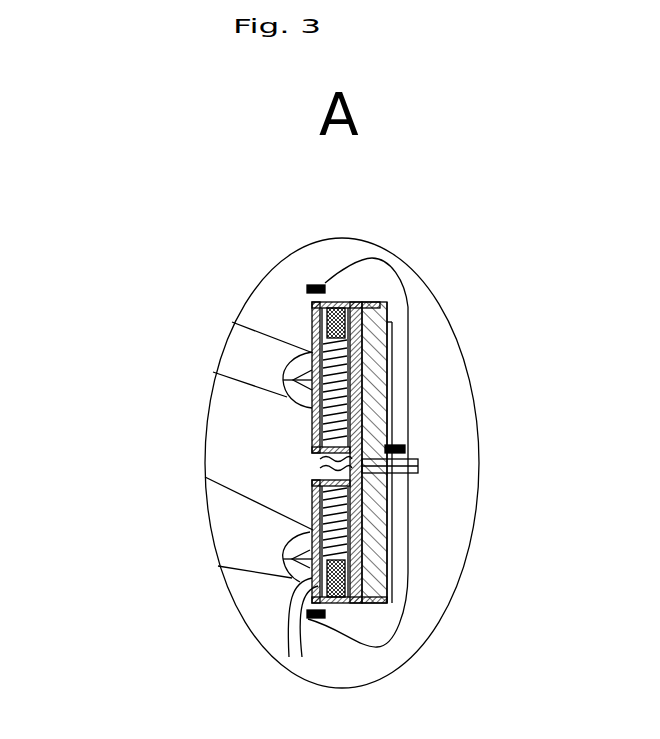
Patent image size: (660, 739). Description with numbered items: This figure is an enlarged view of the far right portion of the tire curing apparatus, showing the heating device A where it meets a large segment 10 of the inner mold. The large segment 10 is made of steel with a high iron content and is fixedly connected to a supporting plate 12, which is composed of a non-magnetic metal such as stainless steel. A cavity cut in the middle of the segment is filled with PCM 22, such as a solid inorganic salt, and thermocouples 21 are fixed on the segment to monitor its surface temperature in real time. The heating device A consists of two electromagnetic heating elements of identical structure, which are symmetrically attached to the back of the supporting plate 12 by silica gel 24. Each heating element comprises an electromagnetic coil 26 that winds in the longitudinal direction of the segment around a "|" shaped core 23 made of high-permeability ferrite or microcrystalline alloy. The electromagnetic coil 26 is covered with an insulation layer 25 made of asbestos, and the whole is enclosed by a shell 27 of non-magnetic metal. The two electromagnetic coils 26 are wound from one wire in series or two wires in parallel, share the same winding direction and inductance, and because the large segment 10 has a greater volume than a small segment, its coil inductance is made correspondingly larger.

The large segment 10 is at (397, 313).
The supporting plate 12 is at (292, 578).
The thermocouple 21 is at (308, 288).
The PCM 22 is at (382, 303).
The "|" shaped core 23 is at (400, 447).
The silica gel 24 is at (357, 565).
The insulation layer a 25 is at (290, 545).
The electromagnetic coil a 26 is at (313, 438).
The shell 27 is at (313, 423).